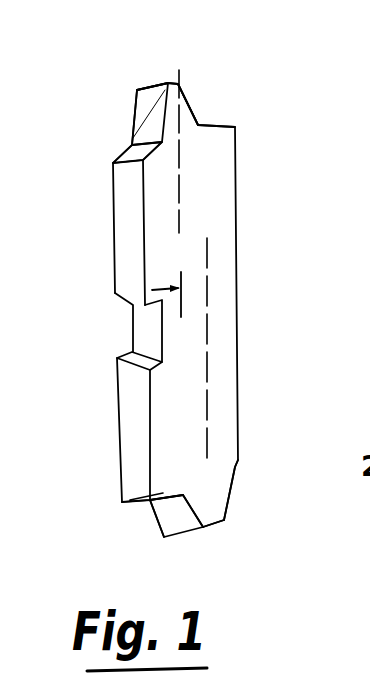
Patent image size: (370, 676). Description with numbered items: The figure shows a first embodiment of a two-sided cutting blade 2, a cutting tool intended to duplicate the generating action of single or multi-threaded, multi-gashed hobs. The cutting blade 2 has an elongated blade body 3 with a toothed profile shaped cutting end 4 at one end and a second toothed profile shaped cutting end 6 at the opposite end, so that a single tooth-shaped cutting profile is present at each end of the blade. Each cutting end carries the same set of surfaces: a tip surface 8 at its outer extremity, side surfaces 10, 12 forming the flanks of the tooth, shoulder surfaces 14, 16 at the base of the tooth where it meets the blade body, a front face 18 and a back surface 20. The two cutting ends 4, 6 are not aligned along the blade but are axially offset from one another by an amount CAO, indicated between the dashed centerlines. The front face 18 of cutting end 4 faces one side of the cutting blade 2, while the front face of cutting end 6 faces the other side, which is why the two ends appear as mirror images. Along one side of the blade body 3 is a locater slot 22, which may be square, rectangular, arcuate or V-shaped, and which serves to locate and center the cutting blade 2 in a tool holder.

The cutting blade 2 is at (255, 327).
The blade body 3 is at (236, 193).
The cutting end 4 is at (132, 88).
The cutting end 6 is at (237, 500).
The tip surface 8 is at (158, 82).
The side surface 10 is at (142, 118).
The side surface 12 is at (190, 80).
The shoulder surface 14 is at (133, 147).
The shoulder surface 16 is at (214, 127).
The front face 18 is at (183, 105).
The back surface 20 is at (207, 508).
The locater slot 22 is at (134, 330).
The axial offset amount CAO is at (213, 270).